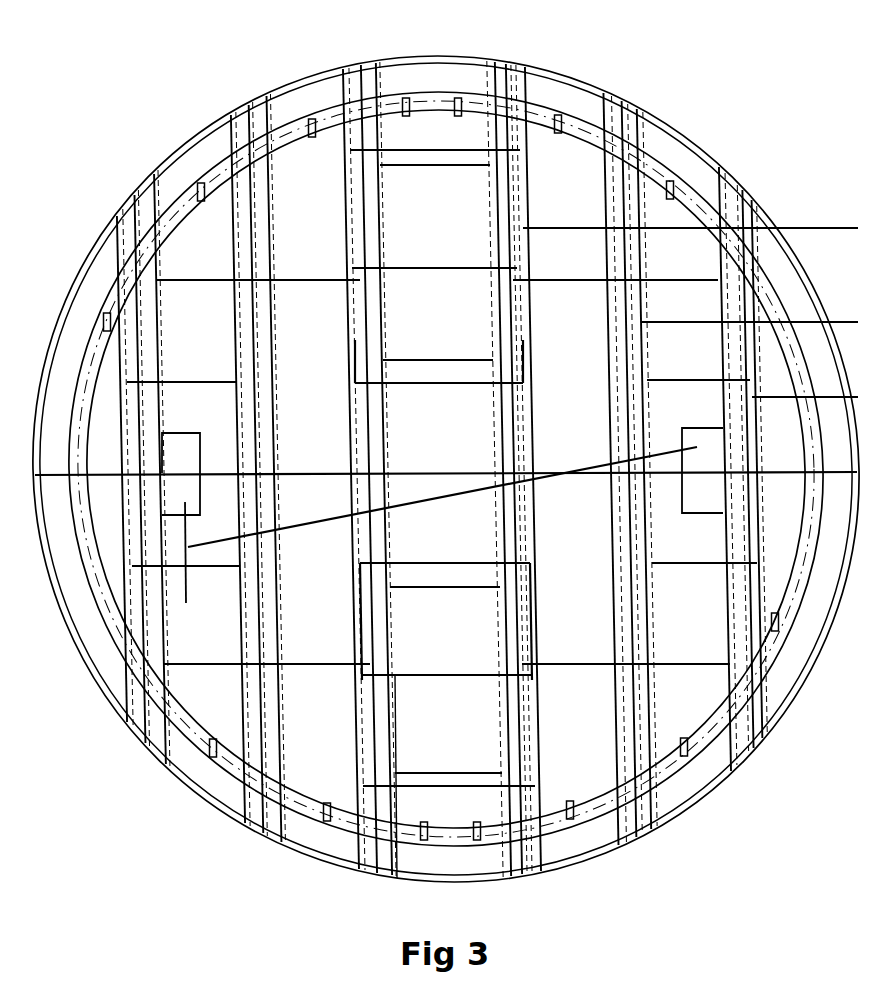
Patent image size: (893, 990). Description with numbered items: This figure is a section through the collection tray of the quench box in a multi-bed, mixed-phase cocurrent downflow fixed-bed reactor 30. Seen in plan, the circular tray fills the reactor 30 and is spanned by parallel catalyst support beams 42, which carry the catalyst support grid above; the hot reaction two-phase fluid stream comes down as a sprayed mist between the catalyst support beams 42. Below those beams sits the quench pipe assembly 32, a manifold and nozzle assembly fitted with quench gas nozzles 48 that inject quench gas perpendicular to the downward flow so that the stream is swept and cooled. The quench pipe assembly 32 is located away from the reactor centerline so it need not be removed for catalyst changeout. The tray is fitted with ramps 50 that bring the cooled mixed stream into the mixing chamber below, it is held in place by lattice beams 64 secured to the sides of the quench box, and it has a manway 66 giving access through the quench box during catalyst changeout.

The fixed-bed reactor 30 is at (298, 865).
The quench pipe assembly 32 is at (93, 350).
The catalyst support beams 42 is at (497, 62).
The quench gas nozzles 48 is at (477, 840).
The ramps 50 is at (188, 603).
The lattice beams 64 is at (858, 397).
The manway 66 is at (438, 517).